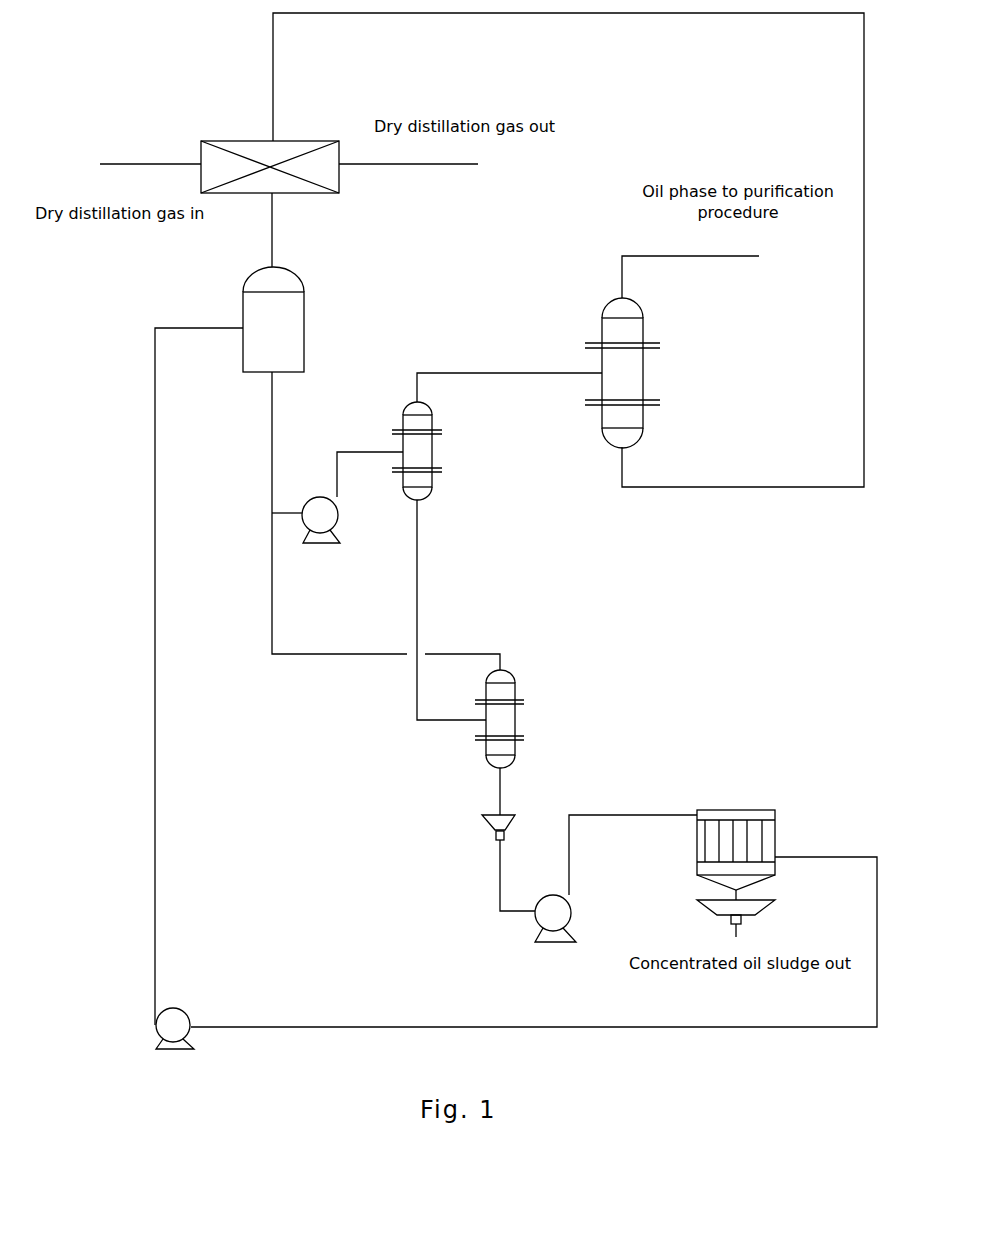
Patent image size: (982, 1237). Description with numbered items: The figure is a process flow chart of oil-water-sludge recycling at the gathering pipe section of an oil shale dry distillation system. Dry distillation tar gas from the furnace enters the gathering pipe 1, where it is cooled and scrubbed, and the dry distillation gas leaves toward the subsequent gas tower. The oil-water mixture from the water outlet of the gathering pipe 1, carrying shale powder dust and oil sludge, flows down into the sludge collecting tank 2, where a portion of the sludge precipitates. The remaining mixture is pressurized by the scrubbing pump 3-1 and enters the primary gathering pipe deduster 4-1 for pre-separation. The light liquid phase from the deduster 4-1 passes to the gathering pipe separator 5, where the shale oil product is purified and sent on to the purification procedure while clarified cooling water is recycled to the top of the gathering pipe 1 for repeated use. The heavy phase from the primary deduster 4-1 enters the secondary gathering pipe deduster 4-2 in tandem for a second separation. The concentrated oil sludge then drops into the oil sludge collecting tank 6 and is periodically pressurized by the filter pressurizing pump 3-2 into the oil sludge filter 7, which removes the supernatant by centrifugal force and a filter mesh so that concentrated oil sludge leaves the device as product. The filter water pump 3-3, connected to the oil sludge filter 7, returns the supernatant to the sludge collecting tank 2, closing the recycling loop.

The gathering pipe 1 is at (288, 177).
The sludge collecting tank 2 is at (297, 319).
The scrubbing pump 3-1 is at (344, 520).
The filter pressurizing pump 3-2 is at (580, 917).
The filter water pump 3-3 is at (194, 1009).
The primary gathering pipe deduster 4-1 is at (452, 455).
The secondary gathering pipe deduster 4-2 is at (518, 710).
The gathering pipe separator 5 is at (642, 373).
The oil sludge collecting tank 6 is at (509, 819).
The oil sludge filter 7 is at (747, 865).